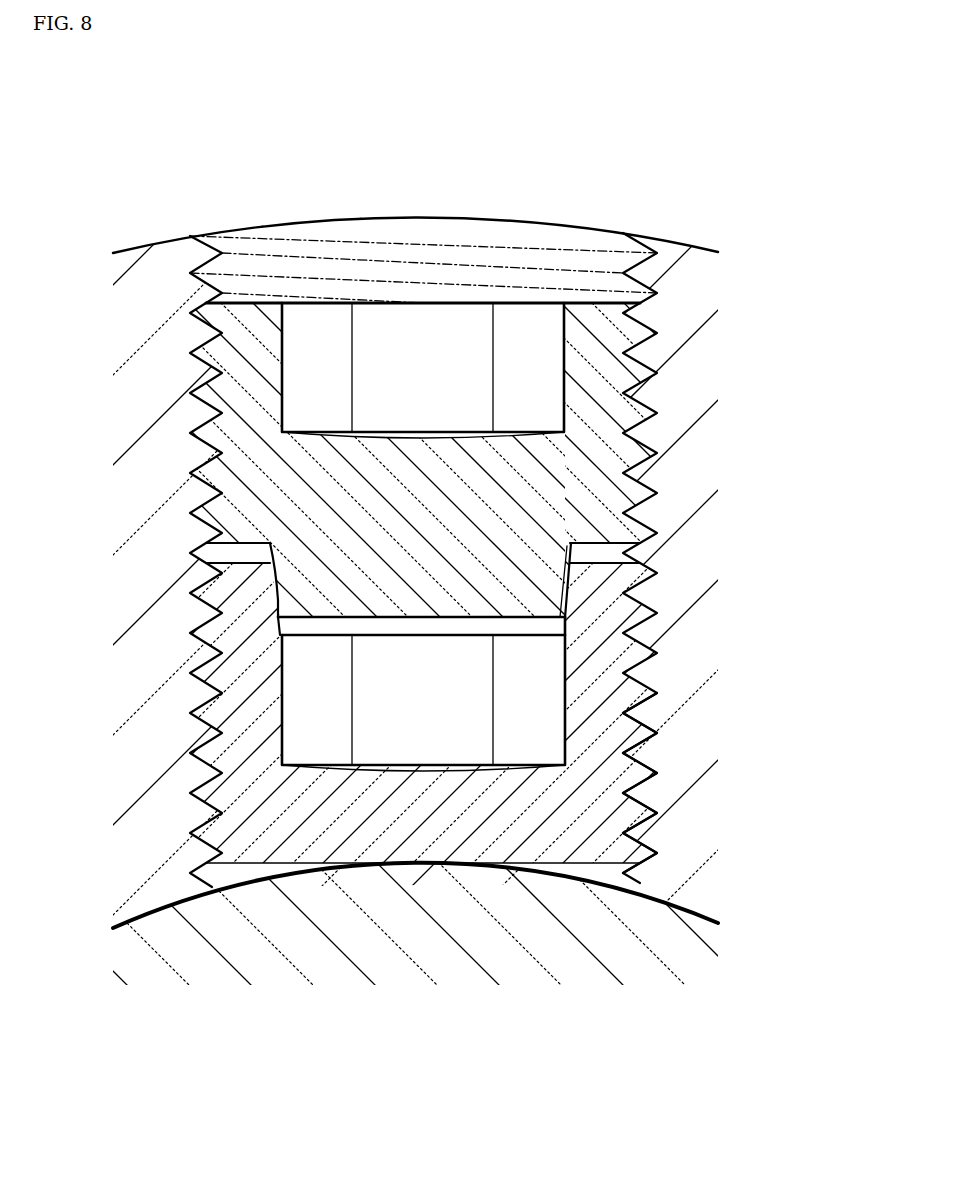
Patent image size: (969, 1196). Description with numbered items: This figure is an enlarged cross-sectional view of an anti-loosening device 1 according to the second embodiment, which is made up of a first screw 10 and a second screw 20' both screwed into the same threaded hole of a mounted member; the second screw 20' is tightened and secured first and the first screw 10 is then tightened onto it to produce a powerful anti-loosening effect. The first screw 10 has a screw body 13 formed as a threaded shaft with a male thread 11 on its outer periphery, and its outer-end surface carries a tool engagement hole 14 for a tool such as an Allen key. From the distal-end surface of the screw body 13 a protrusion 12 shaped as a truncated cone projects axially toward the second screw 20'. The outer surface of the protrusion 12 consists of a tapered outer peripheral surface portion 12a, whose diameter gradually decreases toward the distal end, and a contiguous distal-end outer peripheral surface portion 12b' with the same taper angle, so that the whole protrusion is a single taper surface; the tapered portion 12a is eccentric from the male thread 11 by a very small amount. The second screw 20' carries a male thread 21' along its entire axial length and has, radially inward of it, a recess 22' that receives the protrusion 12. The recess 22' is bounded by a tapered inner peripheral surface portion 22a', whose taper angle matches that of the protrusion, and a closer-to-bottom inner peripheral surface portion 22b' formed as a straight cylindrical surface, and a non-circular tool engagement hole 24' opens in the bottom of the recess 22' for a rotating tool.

The anti-loosening device 1 is at (492, 206).
The first screw 10 is at (425, 303).
The male thread 11 is at (645, 370).
The protrusion 12 is at (520, 608).
The tapered outer peripheral surface portion 12a is at (265, 587).
The distal-end outer peripheral surface portion 12b' is at (162, 624).
The screw body 13 is at (600, 462).
The tool engagement hole 14 is at (283, 350).
The second screw 20' is at (415, 742).
The male thread 21' is at (695, 783).
The recess 22' is at (421, 823).
The tapered inner peripheral surface portion 22a' is at (665, 564).
The closer-to-bottom inner peripheral surface portion 22b' is at (666, 600).
The tool engagement hole 24' is at (423, 834).